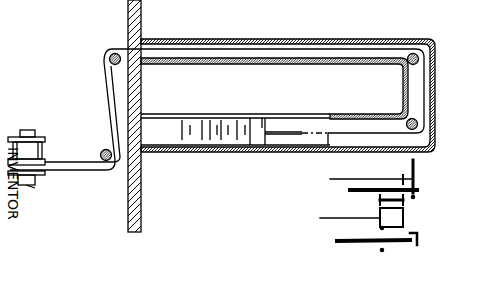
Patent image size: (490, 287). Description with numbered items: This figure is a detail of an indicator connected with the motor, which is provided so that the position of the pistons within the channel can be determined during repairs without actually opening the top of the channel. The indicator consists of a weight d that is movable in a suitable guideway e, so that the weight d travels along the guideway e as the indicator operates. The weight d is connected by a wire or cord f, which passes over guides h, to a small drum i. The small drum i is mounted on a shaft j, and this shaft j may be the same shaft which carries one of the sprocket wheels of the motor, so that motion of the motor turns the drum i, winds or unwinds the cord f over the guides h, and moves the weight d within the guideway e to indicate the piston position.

The guides h is at (104, 58).
The small drum i is at (28, 130).
The shaft j is at (34, 188).
The weight d is at (262, 118).
The guideway e is at (343, 122).
The wire or cord f is at (408, 134).